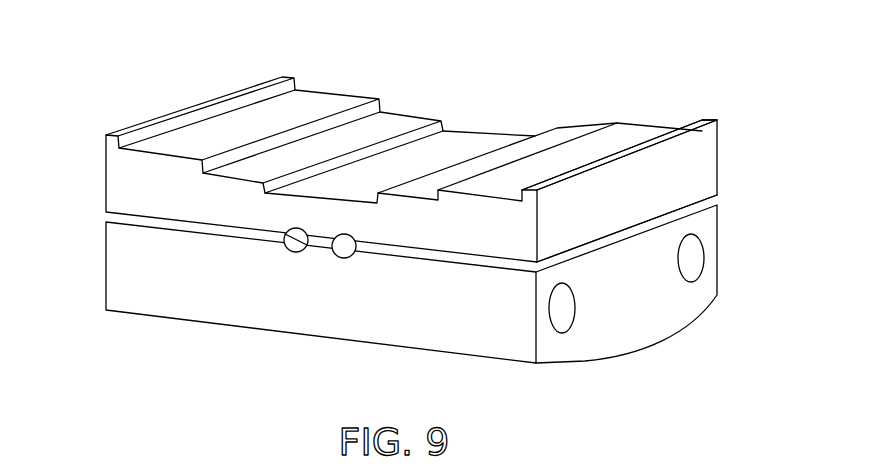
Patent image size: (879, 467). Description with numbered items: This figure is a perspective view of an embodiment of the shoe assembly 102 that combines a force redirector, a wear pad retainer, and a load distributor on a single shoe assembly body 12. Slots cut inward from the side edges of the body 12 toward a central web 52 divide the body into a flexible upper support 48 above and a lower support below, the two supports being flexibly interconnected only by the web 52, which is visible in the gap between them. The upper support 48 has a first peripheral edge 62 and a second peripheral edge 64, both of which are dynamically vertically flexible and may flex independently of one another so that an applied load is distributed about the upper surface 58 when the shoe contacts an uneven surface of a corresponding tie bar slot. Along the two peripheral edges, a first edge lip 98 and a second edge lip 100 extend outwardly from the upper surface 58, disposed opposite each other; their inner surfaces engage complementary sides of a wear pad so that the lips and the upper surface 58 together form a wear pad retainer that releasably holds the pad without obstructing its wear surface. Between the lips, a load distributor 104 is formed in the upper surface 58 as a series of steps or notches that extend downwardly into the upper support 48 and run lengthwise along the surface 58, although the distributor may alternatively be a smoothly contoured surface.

The shoe assembly body 12 is at (143, 317).
The flexible upper support 48 is at (456, 134).
The central web 52 is at (318, 253).
The upper surface 58 is at (303, 110).
The peripheral edge 62 is at (197, 107).
The peripheral edge 64 is at (633, 155).
The first edge lip 98 is at (713, 119).
The second edge lip 100 is at (293, 78).
The shoe assembly 102 is at (440, 78).
The load distributor 104 is at (433, 153).